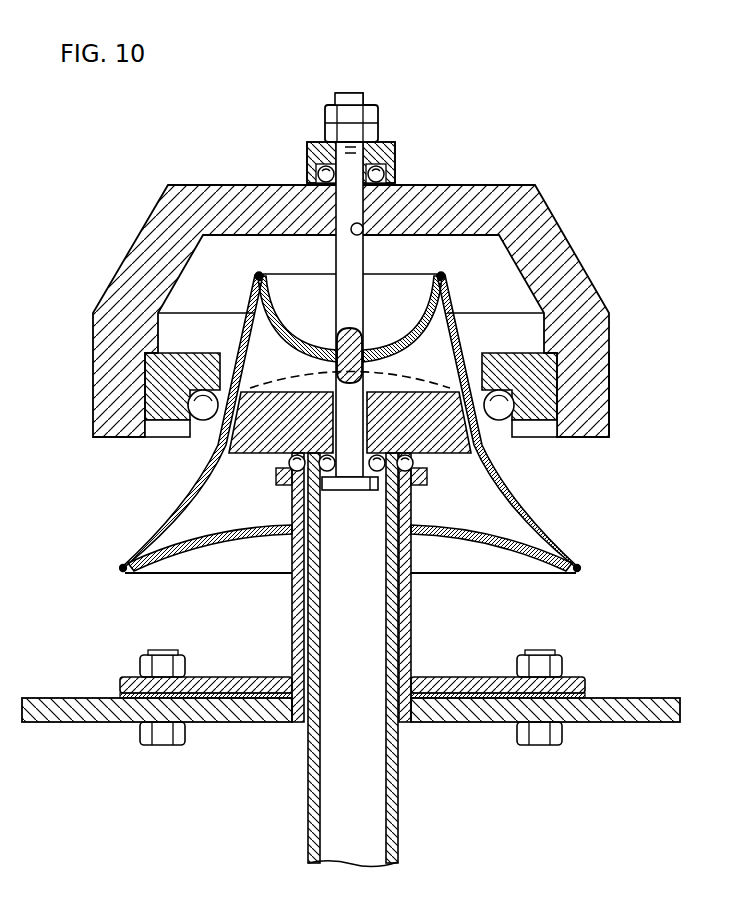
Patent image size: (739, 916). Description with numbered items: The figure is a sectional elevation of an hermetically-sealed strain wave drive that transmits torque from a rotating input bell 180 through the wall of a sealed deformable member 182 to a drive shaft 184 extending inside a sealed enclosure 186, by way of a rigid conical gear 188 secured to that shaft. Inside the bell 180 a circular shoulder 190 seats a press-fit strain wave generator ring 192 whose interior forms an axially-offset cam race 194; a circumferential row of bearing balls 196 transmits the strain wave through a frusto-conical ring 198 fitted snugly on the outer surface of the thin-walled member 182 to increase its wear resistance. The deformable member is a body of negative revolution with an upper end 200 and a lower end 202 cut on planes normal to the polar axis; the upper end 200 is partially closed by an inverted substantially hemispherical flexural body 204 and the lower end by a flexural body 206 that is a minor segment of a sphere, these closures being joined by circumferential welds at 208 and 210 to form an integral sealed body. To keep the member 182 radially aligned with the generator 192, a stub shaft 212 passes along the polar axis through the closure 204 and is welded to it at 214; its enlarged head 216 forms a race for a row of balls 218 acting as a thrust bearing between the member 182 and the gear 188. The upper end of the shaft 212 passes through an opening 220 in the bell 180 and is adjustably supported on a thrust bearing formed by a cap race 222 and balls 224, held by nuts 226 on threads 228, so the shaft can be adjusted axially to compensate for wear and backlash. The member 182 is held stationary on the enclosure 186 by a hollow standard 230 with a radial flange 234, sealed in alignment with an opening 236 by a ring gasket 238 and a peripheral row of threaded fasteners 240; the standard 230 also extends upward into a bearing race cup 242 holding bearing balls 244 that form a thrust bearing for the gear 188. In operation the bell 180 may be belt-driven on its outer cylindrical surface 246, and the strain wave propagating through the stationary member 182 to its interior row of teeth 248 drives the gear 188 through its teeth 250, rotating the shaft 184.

The input bell 180 is at (586, 276).
The deformable member 182 is at (532, 526).
The drive shaft 184 is at (398, 812).
The sealed enclosure 186 is at (632, 698).
The rigid conical gear 188 is at (440, 456).
The circular shoulder 190 is at (530, 355).
The strain wave generator ring 192 is at (200, 338).
The cam race 194 is at (197, 420).
The bearing balls 196 is at (505, 420).
The frusto-conical ring 198 is at (232, 446).
The upper end 200 is at (440, 275).
The lower end 202 is at (475, 578).
The flexural body 204 is at (276, 320).
The flexural body 206 is at (478, 536).
The circumferential weld 208 is at (260, 272).
The circumferential weld 210 is at (578, 575).
The stub shaft 212 is at (364, 290).
The weld 214 is at (364, 340).
The enlarged head 216 is at (328, 490).
The balls 218 is at (374, 492).
The opening 220 is at (362, 236).
The cap race 222 is at (395, 155).
The balls 224 is at (395, 166).
The nuts 226 is at (378, 122).
The threads 228 is at (350, 98).
The hollow standard 230 is at (410, 640).
The radial flange 234 is at (220, 677).
The opening 236 is at (306, 710).
The ring gasket 238 is at (118, 695).
The threaded fasteners 240 is at (290, 535).
The bearing race cup 242 is at (281, 485).
The bearing balls 244 is at (320, 469).
The outer cylindrical surface 246 is at (610, 376).
The teeth 248 is at (289, 464).
The teeth 250 is at (414, 465).